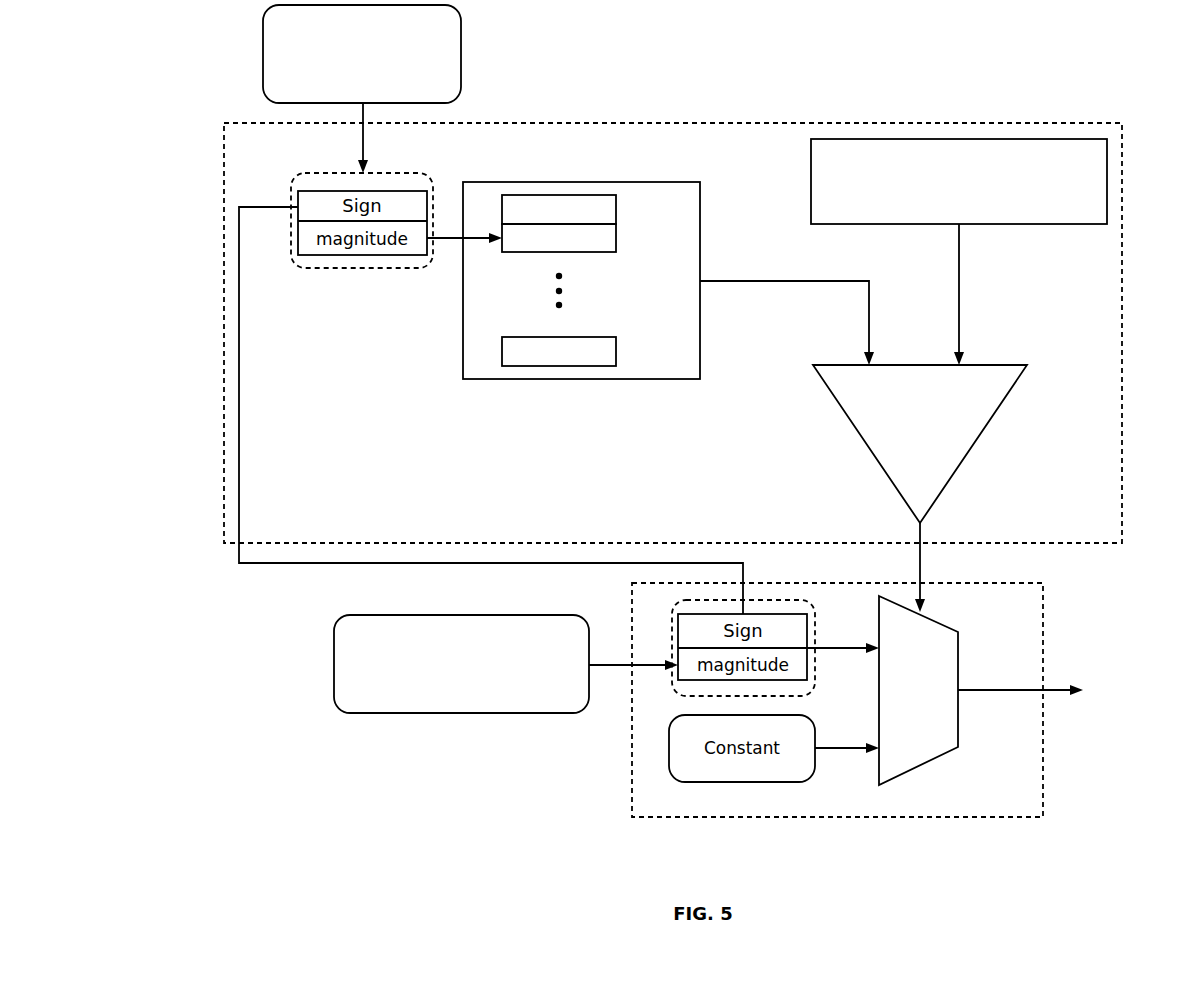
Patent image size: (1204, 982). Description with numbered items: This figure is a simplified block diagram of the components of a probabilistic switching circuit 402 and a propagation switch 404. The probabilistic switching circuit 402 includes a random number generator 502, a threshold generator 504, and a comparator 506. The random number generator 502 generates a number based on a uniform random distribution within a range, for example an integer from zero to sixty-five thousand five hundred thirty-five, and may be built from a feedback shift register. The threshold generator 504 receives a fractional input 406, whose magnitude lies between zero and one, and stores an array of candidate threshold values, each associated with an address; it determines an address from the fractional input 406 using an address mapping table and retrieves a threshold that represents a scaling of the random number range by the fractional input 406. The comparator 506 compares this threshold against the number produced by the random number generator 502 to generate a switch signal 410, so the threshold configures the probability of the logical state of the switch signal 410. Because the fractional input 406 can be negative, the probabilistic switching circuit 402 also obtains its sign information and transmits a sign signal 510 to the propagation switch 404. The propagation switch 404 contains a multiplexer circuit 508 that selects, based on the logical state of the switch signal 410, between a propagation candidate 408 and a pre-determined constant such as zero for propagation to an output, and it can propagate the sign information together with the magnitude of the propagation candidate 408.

The probabilistic switching circuit 402 is at (1122, 123).
The propagation switch 404 is at (1043, 632).
The fractional input 406 is at (362, 89).
The propagation candidate 408 is at (506, 664).
The switch signal 410 is at (920, 572).
The random number generator 502 is at (959, 252).
The threshold generator 504 is at (700, 182).
The comparator 506 is at (1027, 365).
The multiplexer circuit 508 is at (958, 747).
The sign signal 510 is at (239, 395).